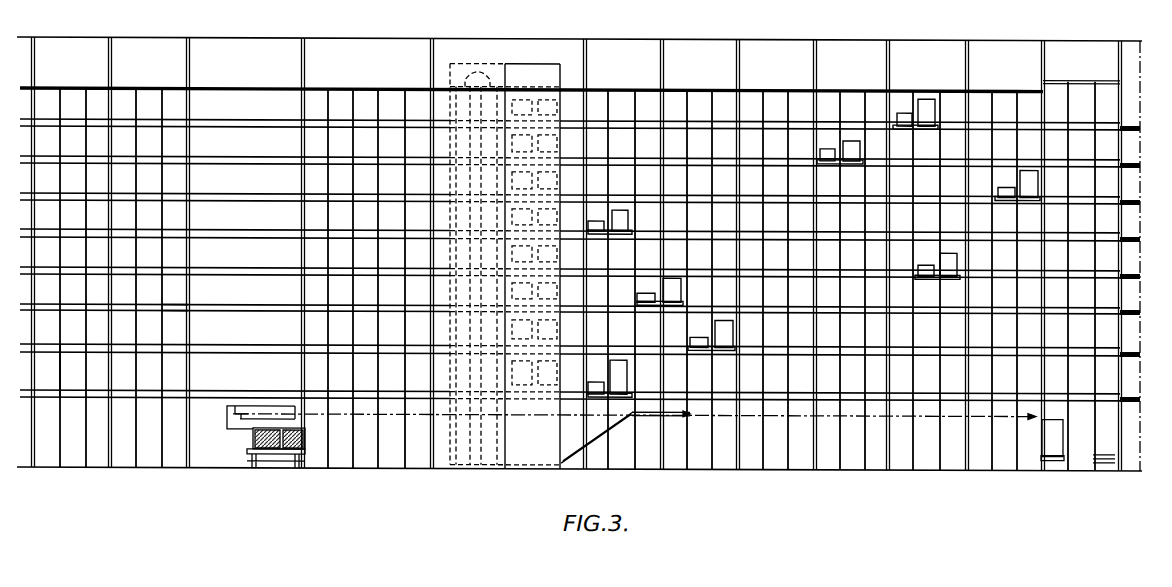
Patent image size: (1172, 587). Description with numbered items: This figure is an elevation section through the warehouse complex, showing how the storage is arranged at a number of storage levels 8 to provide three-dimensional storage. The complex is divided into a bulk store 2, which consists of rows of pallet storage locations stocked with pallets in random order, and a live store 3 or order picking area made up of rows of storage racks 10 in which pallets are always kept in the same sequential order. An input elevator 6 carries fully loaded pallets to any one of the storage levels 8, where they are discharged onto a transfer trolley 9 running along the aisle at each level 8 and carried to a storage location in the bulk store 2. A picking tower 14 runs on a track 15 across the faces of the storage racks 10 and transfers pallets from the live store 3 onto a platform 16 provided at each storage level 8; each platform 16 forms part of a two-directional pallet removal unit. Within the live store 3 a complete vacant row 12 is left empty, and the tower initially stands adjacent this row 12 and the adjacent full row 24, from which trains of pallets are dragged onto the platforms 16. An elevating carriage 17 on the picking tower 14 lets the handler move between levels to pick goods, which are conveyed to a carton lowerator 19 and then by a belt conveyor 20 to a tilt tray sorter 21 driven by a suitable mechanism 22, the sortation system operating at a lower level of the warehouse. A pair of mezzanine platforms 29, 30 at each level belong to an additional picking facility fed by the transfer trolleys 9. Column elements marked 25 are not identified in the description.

The bulk store 2 is at (783, 70).
The live store 3 is at (380, 72).
The input elevator 6 is at (1055, 137).
The storage level 8 is at (1130, 161).
The transfer trolley 9 is at (598, 229).
The storage rack 10 is at (318, 104).
The vacant row 12 is at (546, 87).
The picking tower 14 is at (532, 55).
The track 15 is at (470, 462).
The platform 16 is at (520, 341).
The elevating carriage 17 is at (470, 367).
The carton lowerator 19 is at (467, 80).
The belt conveyor 20 is at (603, 440).
The tilt tray sorter 21 is at (272, 404).
The drive mechanism 22 is at (254, 433).
The full row 24 is at (515, 87).
The column 25 is at (1104, 137).
The mezzanine platform 29 is at (47, 370).
The mezzanine platform 30 is at (172, 308).